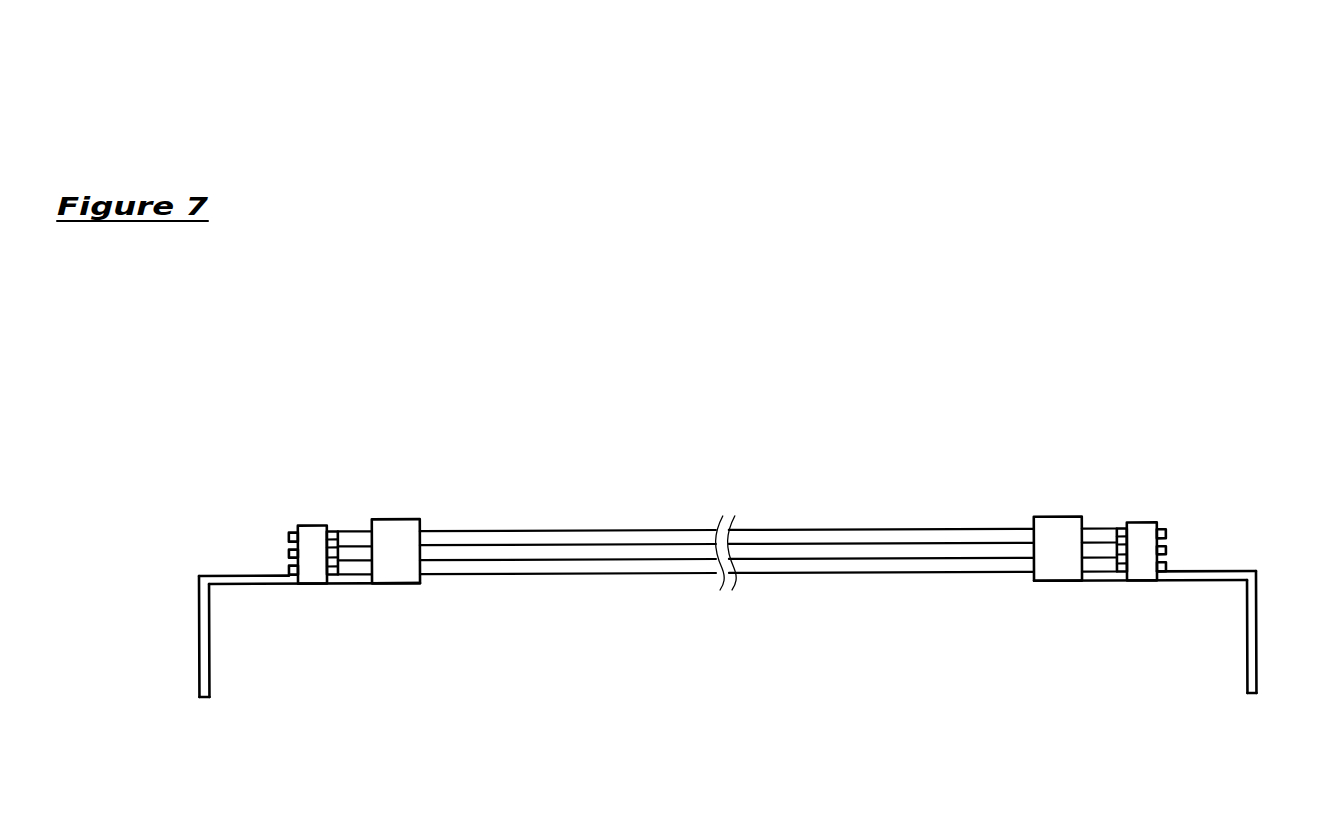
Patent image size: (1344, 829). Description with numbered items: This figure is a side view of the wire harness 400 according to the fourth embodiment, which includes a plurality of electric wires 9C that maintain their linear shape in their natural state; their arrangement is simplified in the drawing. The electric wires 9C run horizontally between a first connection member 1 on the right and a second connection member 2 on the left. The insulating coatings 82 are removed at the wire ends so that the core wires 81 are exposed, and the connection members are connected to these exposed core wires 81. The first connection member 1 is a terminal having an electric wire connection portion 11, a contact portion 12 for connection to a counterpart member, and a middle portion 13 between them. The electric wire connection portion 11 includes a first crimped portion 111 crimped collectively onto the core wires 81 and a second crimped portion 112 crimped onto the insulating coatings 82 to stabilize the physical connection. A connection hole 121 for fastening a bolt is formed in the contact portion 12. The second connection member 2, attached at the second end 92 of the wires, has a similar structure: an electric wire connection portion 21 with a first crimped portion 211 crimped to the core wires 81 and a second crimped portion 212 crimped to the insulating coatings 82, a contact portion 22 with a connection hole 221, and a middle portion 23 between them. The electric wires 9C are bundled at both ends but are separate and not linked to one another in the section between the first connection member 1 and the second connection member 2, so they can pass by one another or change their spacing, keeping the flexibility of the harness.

The wire harness 400 is at (1198, 286).
The first connection member 1 is at (1281, 550).
The second connection member 2 is at (200, 524).
The electric wire connection portion 11 is at (1100, 581).
The first crimped portion 111 is at (1142, 557).
The second crimped portion 112 is at (1058, 548).
The contact portion 12 is at (1278, 653).
The connection hole 121 is at (1260, 673).
The middle portion 13 is at (1220, 571).
The electric wire connection portion 21 is at (356, 612).
The first crimped portion 211 is at (317, 553).
The second crimped portion 212 is at (402, 555).
The contact portion 22 is at (178, 655).
The connection hole 221 is at (195, 678).
The middle portion 23 is at (248, 574).
The core wires 81 is at (1122, 533).
The insulating coatings 82 is at (1092, 535).
The second end 92 is at (442, 514).
The electric wires 9C is at (515, 570).